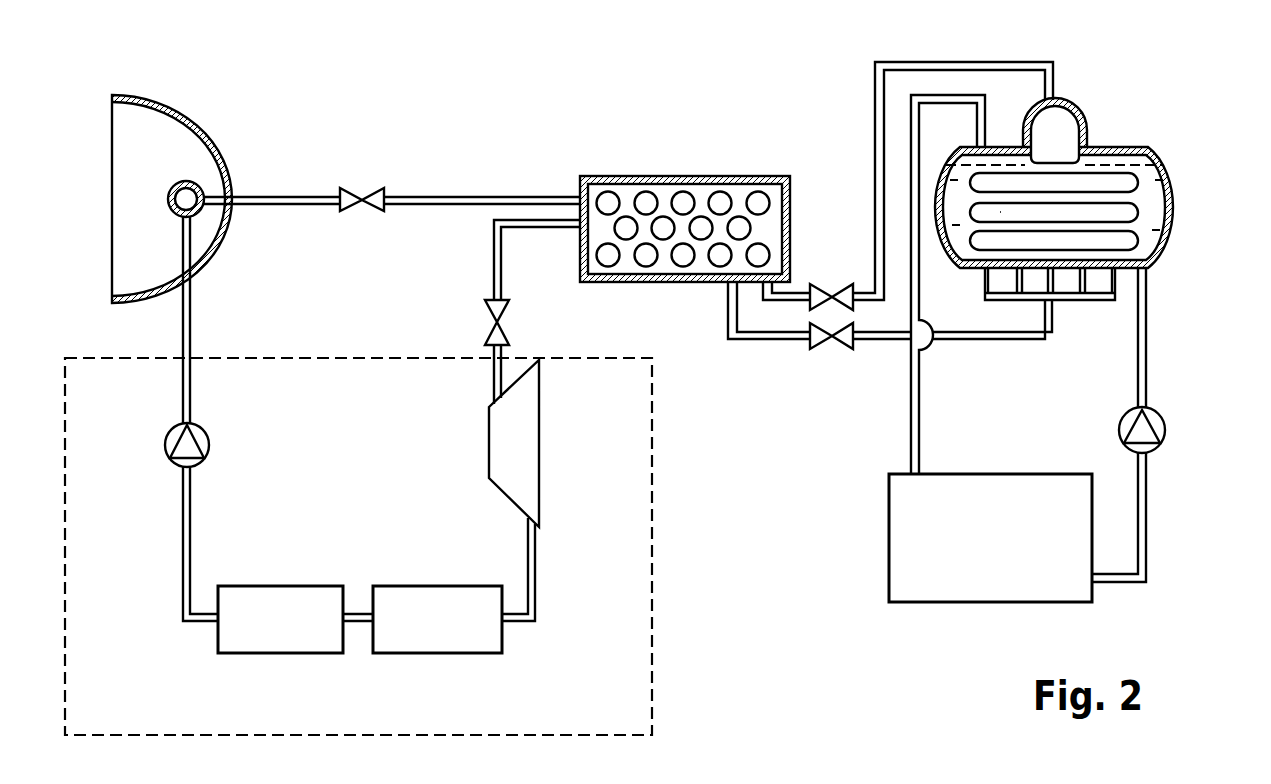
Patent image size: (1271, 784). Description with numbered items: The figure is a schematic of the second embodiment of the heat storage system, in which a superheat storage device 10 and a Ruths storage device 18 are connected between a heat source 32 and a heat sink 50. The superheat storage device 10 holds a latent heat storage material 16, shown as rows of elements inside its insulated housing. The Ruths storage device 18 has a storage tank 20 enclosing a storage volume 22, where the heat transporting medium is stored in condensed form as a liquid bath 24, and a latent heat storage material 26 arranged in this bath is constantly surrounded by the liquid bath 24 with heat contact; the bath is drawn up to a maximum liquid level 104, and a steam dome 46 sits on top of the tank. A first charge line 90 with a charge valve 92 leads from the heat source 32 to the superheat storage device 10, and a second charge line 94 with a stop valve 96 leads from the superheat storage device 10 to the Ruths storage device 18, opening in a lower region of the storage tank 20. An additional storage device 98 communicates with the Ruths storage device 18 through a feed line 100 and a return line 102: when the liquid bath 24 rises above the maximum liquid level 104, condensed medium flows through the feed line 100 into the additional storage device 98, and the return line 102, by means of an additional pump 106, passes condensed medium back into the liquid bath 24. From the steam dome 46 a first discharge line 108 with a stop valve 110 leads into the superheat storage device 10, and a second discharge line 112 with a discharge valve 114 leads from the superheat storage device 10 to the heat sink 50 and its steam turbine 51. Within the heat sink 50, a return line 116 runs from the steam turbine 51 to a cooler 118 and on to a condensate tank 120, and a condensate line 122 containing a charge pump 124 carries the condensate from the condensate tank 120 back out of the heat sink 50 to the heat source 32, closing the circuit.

The superheat storage device 10 is at (660, 176).
The latent heat storage material 16 is at (683, 255).
The Ruths storage device 18 is at (1160, 155).
The storage tank 20 is at (1172, 208).
The storage volume 22 is at (1150, 249).
The liquid bath 24 is at (1160, 192).
The latent heat storage material 26 is at (1120, 213).
The heat source 32 is at (200, 212).
The steam dome 46 is at (1060, 124).
The heat sink 50 is at (652, 487).
The steam turbine 51 is at (524, 450).
The first charge line 90 is at (283, 192).
The charge valve 92 is at (362, 186).
The second charge line 94 is at (765, 341).
The stop valve 96 is at (843, 342).
The additional storage device 98 is at (955, 583).
The feed line 100 is at (921, 425).
The return line 102 is at (1146, 515).
The maximum liquid level 104 is at (1122, 150).
The additional pump 106 is at (1162, 428).
The first discharge line 108 is at (977, 60).
The stop valve 110 is at (841, 288).
The second discharge line 112 is at (492, 258).
The discharge valve 114 is at (505, 328).
The return line 116 is at (538, 581).
The cooler 118 is at (432, 640).
The condensate tank 120 is at (278, 642).
The condensate line 122 is at (182, 550).
The charge pump 124 is at (165, 437).